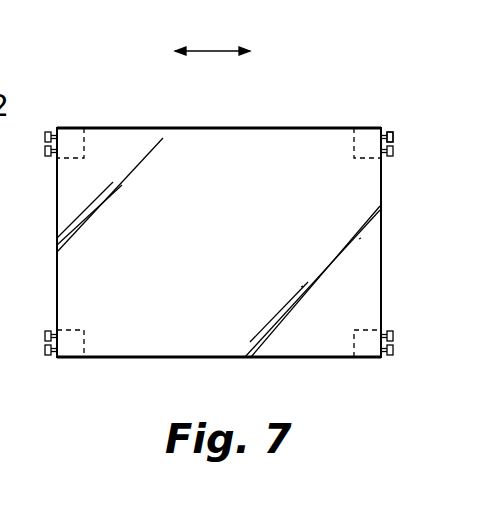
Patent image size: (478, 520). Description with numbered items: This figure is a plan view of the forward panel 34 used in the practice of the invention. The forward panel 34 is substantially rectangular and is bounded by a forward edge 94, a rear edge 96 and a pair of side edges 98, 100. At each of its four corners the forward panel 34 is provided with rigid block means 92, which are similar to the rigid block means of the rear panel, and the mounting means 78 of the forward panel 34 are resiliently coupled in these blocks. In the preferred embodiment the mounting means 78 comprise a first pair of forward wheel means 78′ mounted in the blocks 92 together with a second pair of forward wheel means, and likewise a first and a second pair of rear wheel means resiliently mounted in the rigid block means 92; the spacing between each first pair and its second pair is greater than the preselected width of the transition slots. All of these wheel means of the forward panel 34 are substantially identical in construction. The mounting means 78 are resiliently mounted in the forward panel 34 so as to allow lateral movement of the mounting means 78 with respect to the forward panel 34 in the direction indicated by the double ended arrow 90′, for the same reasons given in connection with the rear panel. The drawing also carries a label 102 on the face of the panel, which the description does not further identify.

The forward panel 34 is at (237, 263).
The mounting means 78 is at (393, 137).
The first pair of forward wheel means 78′ is at (70, 73).
The double ended arrow 90′ is at (260, 4).
The rigid block means 92 is at (74, 128).
The forward edge 94 is at (213, 127).
The rear edge 96 is at (250, 358).
The side edge 98 is at (57, 250).
The side edge 100 is at (382, 244).
The panel surface 102 is at (300, 196).